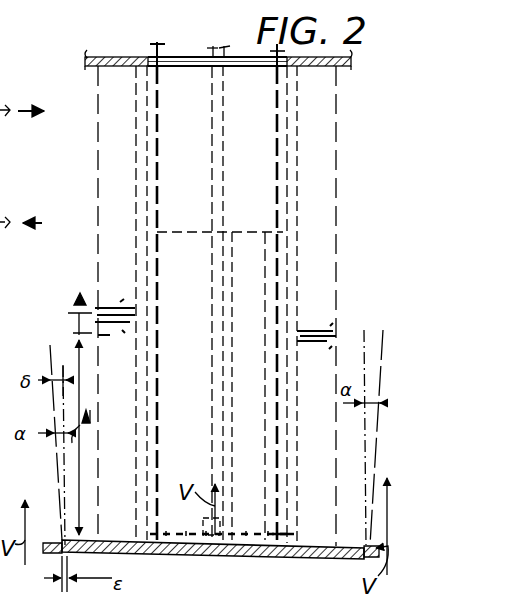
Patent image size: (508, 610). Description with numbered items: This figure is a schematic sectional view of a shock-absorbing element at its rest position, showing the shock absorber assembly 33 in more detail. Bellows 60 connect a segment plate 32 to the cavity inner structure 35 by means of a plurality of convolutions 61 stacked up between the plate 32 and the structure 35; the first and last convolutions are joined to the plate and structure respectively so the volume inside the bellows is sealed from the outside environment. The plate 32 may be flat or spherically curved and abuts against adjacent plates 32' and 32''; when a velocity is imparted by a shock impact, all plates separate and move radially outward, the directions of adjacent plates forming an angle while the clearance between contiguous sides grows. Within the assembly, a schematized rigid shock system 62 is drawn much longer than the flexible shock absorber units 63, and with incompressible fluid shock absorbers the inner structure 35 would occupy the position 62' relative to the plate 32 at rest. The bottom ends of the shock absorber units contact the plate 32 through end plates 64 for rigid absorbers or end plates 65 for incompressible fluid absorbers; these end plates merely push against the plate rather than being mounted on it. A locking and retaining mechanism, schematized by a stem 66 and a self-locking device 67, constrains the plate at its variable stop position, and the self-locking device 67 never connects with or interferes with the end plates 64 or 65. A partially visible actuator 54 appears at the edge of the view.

The cavity inner structure 35 is at (115, 57).
The shock absorber assembly 33 is at (96, 262).
The bellows 60 is at (337, 200).
The convolutions 61 is at (335, 328).
The rigid shock system 62 is at (164, 303).
The position of inner structure with incompressible fluid shock absorbers 62' is at (220, 386).
The flexible shock absorber units 63 is at (266, 398).
The stem 66 is at (217, 145).
The end plates 64 is at (168, 532).
The end plates 65 is at (276, 533).
The self-locking device 67 is at (224, 526).
The plate 32 is at (213, 562).
The adjacent plate 32' is at (33, 568).
The adjacent plate 32'' is at (350, 565).
The actuator 54 is at (7, 269).